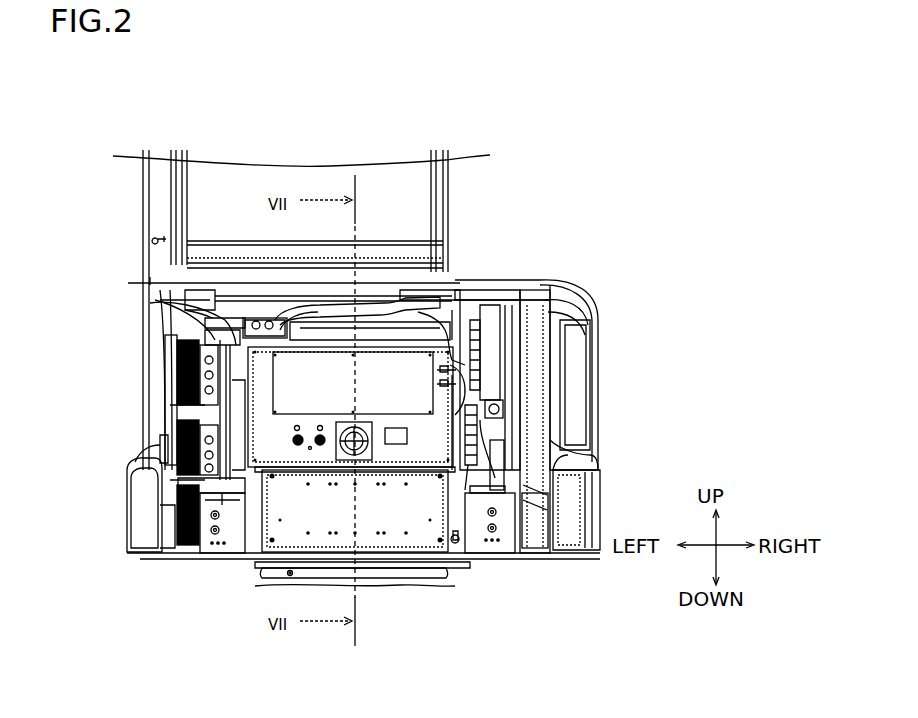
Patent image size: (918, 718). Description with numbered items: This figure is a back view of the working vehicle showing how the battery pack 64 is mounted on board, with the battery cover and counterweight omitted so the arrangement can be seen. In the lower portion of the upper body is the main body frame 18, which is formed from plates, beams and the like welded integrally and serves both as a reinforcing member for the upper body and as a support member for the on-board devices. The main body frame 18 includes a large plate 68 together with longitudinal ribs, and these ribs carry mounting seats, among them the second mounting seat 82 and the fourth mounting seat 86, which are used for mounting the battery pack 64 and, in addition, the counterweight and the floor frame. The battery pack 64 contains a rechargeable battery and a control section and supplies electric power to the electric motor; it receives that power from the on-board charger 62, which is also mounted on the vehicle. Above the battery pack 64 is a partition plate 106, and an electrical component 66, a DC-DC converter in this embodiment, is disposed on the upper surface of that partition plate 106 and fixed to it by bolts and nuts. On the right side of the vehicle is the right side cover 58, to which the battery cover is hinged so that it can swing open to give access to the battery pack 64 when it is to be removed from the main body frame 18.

The main body frame 18 is at (568, 568).
The right side cover 58 is at (587, 297).
The on-board charger 62 is at (162, 492).
The battery pack 64 is at (437, 440).
The electrical component 66 is at (227, 322).
The large plate 68 is at (523, 553).
The second mounting seat 82 is at (232, 533).
The fourth mounting seat 86 is at (480, 533).
The partition plate 106 is at (254, 318).